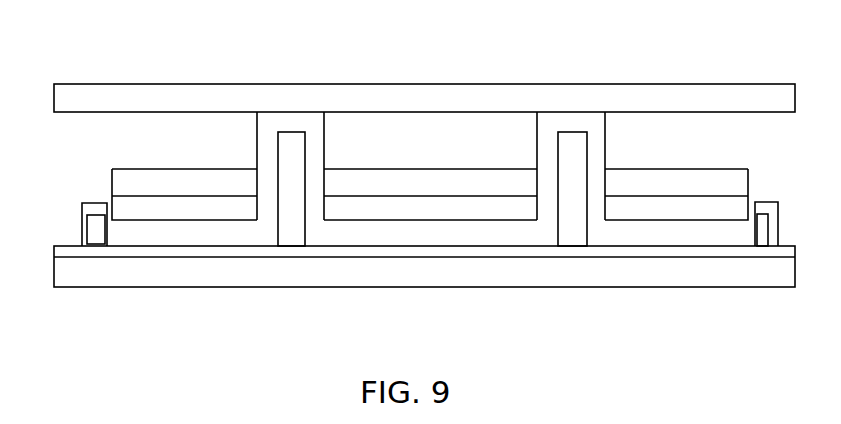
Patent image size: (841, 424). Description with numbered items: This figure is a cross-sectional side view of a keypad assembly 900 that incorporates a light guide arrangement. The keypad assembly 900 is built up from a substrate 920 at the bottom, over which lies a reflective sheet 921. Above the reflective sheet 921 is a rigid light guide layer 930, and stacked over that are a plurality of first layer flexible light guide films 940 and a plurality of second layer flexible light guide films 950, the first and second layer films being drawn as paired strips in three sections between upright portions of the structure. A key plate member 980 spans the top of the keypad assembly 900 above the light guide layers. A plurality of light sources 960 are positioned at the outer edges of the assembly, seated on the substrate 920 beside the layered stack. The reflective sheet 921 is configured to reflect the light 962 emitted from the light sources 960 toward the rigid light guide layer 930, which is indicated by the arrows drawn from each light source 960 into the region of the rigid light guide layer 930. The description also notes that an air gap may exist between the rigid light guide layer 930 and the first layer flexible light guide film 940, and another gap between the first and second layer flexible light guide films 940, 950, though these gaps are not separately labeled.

The keypad assembly 900 is at (727, 37).
The key plate member 980 is at (480, 108).
The substrate 920 is at (428, 285).
The reflective sheet 921 is at (202, 250).
The rigid light guide layer 930 is at (357, 243).
The first layer flexible light guide films 940 is at (206, 218).
The second layer flexible light guide films 950 is at (251, 193).
The light sources 960 is at (82, 204).
The light 962 is at (100, 226).